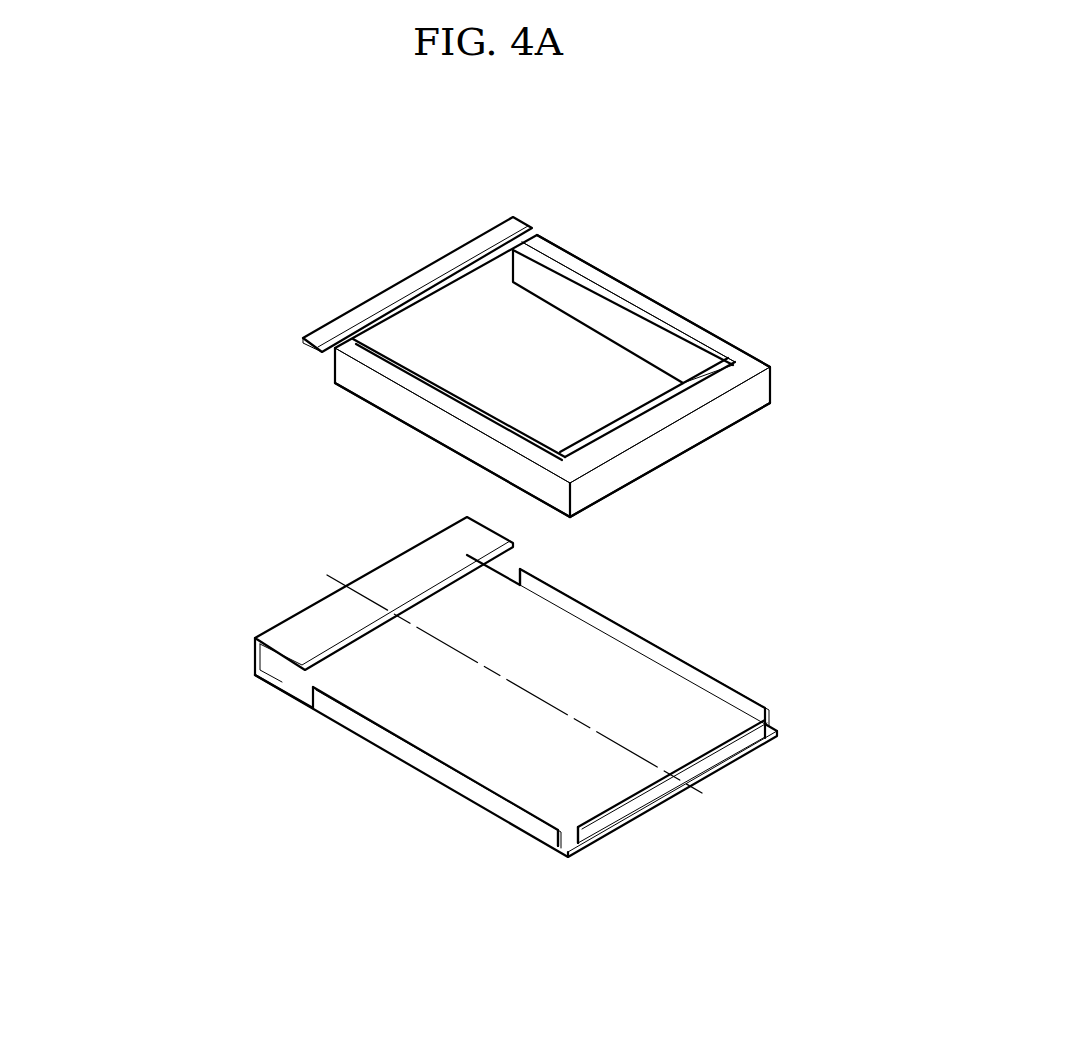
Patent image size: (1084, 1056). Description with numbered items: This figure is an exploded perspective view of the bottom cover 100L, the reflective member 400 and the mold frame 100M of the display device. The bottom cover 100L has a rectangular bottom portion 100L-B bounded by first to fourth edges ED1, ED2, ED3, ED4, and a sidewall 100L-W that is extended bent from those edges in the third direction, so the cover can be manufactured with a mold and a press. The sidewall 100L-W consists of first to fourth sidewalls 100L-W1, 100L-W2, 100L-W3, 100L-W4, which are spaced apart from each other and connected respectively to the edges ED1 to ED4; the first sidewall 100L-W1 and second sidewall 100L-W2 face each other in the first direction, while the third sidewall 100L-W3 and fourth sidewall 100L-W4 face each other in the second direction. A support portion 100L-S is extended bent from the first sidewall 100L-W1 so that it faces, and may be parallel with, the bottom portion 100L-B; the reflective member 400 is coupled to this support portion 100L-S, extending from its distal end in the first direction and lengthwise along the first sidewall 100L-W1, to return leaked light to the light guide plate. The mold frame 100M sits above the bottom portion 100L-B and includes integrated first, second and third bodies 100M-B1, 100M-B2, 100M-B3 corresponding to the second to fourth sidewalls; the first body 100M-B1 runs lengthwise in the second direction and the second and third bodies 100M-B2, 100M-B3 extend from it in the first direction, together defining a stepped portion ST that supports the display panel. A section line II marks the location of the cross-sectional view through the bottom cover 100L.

The reflective member 400 is at (518, 228).
The stepped portion ST is at (583, 287).
The mold frame 100M is at (599, 369).
The first body 100M-B1 is at (713, 418).
The second body 100M-B2 is at (700, 325).
The third body 100M-B3 is at (427, 418).
The bottom cover 100L is at (478, 704).
The bottom portion 100L-B is at (510, 770).
The sidewall 100L-W is at (478, 704).
The first sidewall 100L-W1 is at (318, 649).
The second sidewall 100L-W2 is at (705, 791).
The third sidewall 100L-W3 is at (676, 653).
The fourth sidewall 100L-W4 is at (437, 789).
The support portion 100L-S is at (268, 683).
The first edge ED1 is at (283, 668).
The second edge ED2 is at (620, 838).
The third edge ED3 is at (628, 646).
The fourth edge ED4 is at (528, 836).
The section line II- II is at (331, 576).